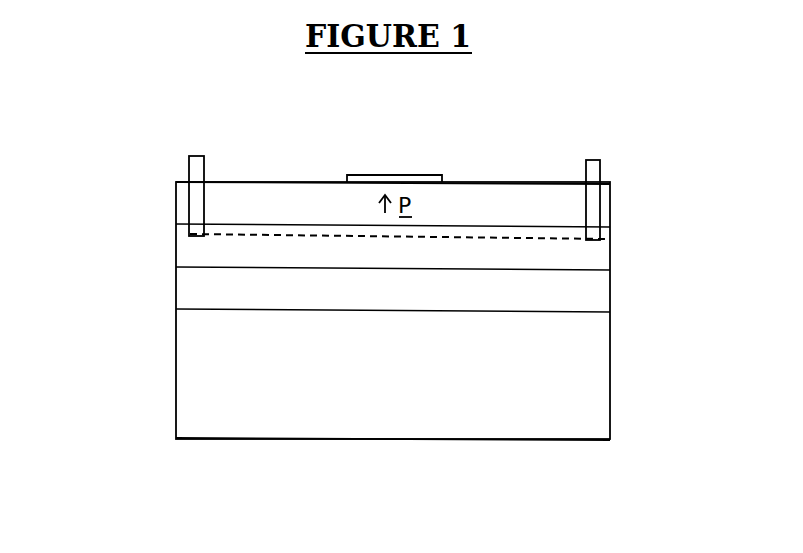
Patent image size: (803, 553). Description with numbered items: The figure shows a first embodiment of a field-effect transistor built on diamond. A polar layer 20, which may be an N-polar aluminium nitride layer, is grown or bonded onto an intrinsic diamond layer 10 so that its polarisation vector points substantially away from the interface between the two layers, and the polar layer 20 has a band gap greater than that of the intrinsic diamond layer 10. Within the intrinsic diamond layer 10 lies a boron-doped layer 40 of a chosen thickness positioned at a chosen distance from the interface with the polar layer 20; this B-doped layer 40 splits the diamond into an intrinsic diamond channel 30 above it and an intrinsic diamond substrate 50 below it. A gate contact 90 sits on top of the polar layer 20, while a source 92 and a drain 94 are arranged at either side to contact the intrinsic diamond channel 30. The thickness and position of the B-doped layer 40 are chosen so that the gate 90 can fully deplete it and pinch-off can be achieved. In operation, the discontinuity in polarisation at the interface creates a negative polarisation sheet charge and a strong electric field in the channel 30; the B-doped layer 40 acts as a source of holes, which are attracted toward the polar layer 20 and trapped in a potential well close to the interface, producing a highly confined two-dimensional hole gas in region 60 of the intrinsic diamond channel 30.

The intrinsic diamond layer 10 is at (635, 440).
The polar layer 20 is at (602, 209).
The intrinsic diamond channel 30 is at (177, 249).
The B-doped layer 40 is at (183, 289).
The intrinsic diamond substrate 50 is at (183, 375).
The region of two-dimensional hole gas 60 is at (177, 233).
The gate contact 90 is at (392, 177).
The source 92 is at (205, 165).
The drain 94 is at (592, 168).